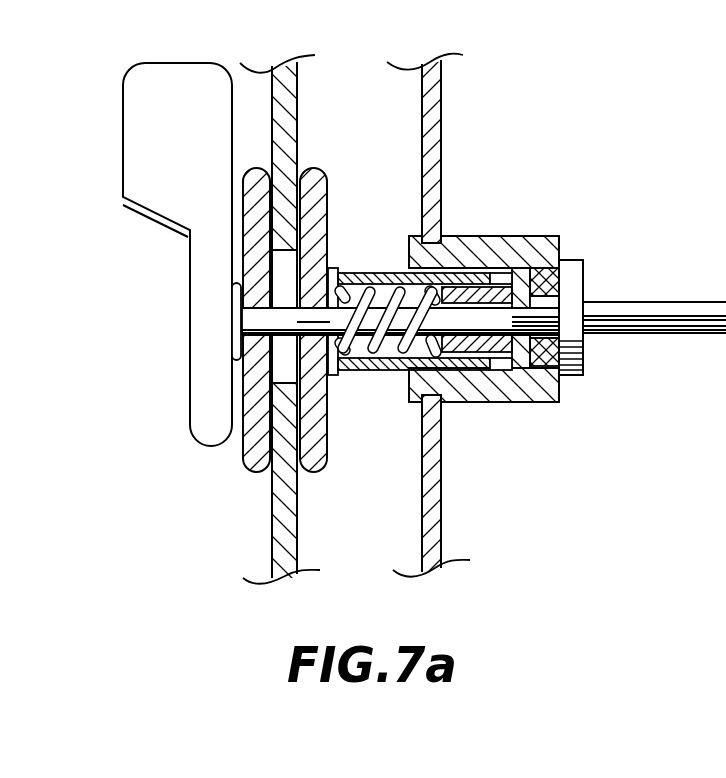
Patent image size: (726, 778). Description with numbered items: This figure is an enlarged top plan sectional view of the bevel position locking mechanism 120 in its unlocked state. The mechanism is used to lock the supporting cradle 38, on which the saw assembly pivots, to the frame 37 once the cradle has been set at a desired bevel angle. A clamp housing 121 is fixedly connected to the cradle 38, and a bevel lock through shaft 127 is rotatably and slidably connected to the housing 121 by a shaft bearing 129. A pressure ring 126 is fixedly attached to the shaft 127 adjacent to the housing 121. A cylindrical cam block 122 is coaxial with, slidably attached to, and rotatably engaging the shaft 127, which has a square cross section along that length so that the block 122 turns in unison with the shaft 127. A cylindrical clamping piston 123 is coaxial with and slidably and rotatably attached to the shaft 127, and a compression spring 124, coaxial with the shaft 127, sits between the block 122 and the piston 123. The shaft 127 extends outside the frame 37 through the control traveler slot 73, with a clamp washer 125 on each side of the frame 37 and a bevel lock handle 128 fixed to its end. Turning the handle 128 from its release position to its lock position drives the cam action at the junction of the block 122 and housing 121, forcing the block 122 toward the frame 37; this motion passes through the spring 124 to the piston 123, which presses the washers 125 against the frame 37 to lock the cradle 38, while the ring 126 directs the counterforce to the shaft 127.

The frame 37 is at (297, 117).
The supporting cradle 38 is at (429, 117).
The control traveler slot 73 is at (283, 362).
The bevel position locking mechanism 120 is at (528, 279).
The clamp housing 121 is at (543, 236).
The cylindrical cam block 122 is at (502, 357).
The cylindrical clamping piston 123 is at (377, 273).
The compression spring 124 is at (373, 372).
The clamp washer 125 is at (257, 177).
The pressure ring 126 is at (577, 337).
The bevel lock through shaft 127 is at (698, 308).
The bevel lock handle 128 is at (204, 139).
The shaft bearing 129 is at (548, 267).